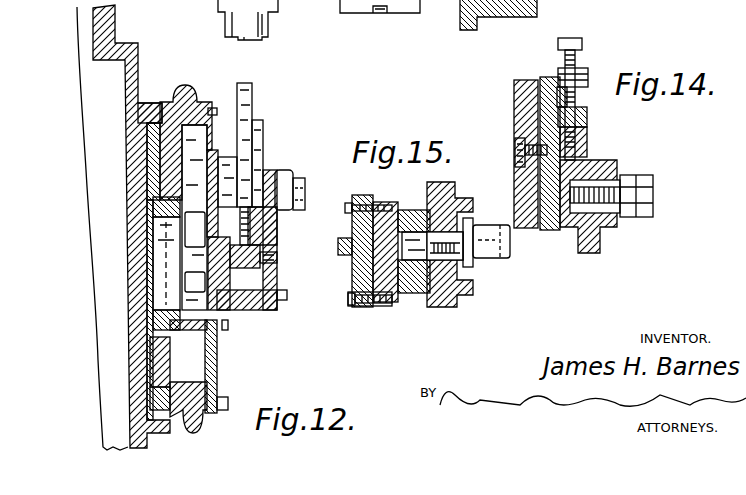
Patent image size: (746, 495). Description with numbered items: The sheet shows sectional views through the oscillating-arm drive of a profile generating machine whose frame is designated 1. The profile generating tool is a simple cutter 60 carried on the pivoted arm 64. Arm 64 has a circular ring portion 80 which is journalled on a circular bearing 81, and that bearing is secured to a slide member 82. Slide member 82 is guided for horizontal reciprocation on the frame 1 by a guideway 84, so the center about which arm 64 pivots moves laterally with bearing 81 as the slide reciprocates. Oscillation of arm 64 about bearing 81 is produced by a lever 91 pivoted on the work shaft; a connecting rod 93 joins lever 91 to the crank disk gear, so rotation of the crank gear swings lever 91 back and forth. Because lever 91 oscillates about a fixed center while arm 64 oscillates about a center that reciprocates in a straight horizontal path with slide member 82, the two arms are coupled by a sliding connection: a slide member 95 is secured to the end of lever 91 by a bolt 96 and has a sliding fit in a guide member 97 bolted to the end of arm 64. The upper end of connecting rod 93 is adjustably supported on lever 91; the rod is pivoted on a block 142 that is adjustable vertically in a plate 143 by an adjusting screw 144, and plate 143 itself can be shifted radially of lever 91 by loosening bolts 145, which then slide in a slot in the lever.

In FIG. 12, the frame 1 is at (115, 25).
In FIG. 12, the cutter 60 is at (323, 0).
In FIG. 15, the pivoted arm 64 is at (368, 307).
In FIG. 12, the circular ring portion 80 is at (180, 97).
In FIG. 12, the circular bearing 81 is at (138, 145).
In FIG. 12, the slide member 82 is at (160, 355).
In FIG. 12, the guideway 84 is at (150, 104).
In FIG. 15, the lever 91 is at (473, 287).
In FIG. 14, the lever 91 is at (510, 100).
In FIG. 14, the connecting rod 93 is at (602, 247).
In FIG. 15, the slide member 95 is at (415, 212).
In FIG. 15, the bolt 96 is at (475, 230).
In FIG. 15, the guide member 97 is at (397, 203).
In FIG. 14, the block 142 is at (588, 118).
In FIG. 14, the plate 143 is at (543, 77).
In FIG. 14, the adjusting screw 144 is at (582, 43).
In FIG. 14, the bolt 145 is at (515, 150).